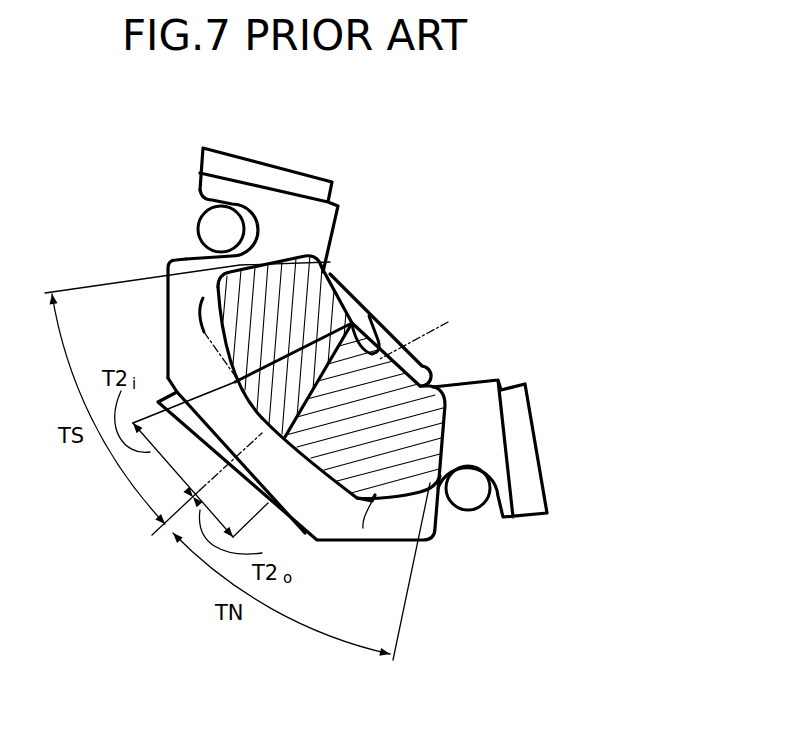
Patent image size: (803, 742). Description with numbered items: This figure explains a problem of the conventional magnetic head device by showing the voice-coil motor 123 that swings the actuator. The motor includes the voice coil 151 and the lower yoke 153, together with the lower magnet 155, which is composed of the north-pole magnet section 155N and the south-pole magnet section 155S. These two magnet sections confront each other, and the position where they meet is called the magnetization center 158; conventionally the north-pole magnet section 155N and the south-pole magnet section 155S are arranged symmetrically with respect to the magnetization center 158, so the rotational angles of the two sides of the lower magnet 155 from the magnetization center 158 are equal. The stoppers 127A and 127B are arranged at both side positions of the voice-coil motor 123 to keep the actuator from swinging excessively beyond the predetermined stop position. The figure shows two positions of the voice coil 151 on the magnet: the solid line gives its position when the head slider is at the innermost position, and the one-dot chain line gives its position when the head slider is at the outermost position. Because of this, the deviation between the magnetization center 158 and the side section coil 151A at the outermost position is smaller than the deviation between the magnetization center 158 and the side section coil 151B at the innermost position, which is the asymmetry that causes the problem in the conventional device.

The voice-coil motor 123 is at (269, 107).
The voice coil 151 is at (203, 298).
The side section coil 151A is at (443, 335).
The side section coil 151B is at (262, 332).
The stopper 127A is at (468, 507).
The stopper 127B is at (210, 230).
The lower yoke 153 is at (363, 530).
The lower magnet 155 is at (286, 247).
The south-pole magnet section 155S is at (331, 270).
The north-pole magnet section 155N is at (445, 385).
The magnetization center 158 is at (381, 323).